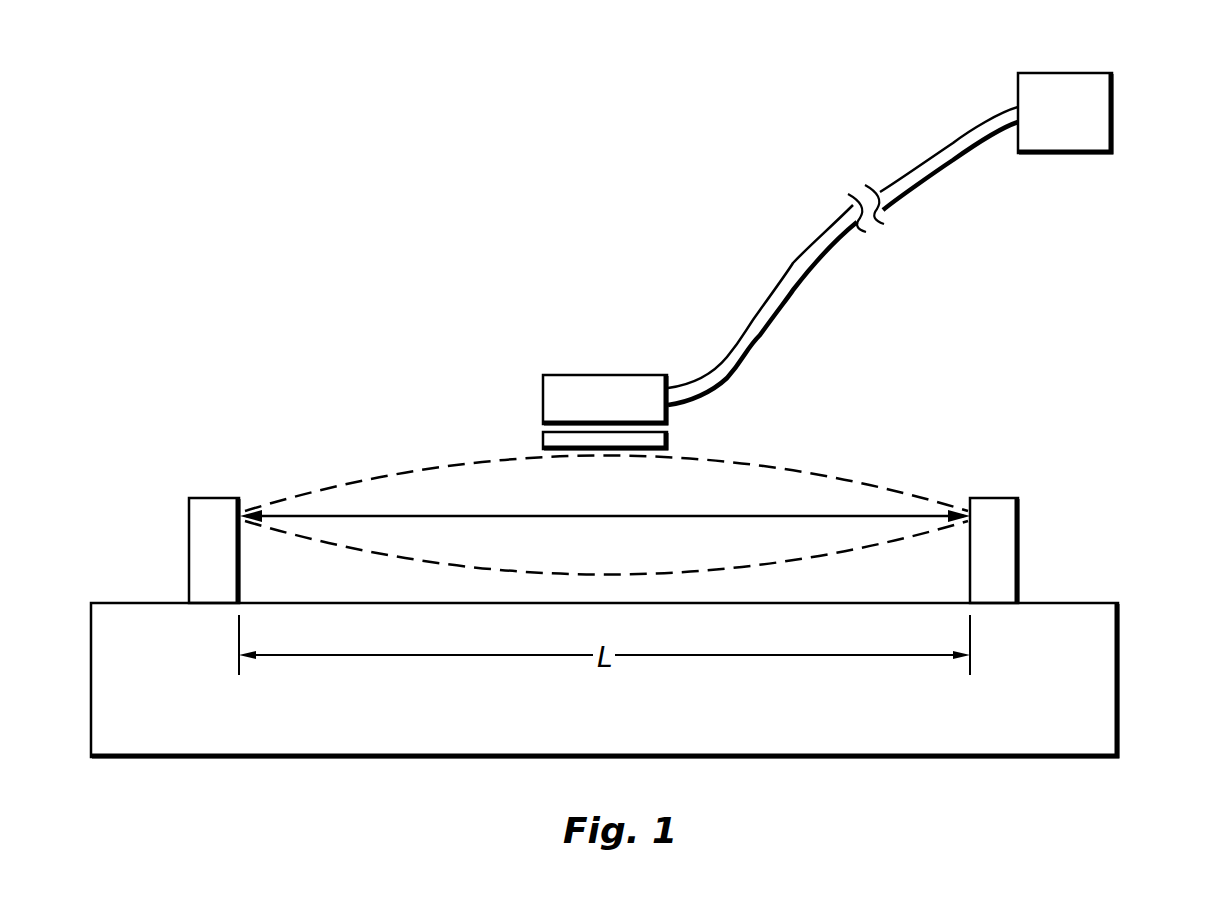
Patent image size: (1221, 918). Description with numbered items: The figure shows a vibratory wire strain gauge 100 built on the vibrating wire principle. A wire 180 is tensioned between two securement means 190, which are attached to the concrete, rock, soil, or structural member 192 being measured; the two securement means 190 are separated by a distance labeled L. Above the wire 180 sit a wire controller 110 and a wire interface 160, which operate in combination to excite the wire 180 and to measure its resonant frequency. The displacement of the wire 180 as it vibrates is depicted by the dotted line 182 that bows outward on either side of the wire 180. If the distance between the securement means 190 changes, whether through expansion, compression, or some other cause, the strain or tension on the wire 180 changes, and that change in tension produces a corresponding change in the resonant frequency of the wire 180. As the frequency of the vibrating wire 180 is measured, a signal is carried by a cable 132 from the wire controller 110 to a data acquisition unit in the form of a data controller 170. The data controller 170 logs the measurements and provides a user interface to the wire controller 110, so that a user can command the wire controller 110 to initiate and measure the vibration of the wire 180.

The vibratory wire strain gauge 100 is at (260, 199).
The wire controller 110 is at (570, 375).
The cable 132 is at (820, 225).
The wire interface 160 is at (543, 436).
The data controller 170 is at (1087, 73).
The wire 180 is at (823, 515).
The dotted line 182 is at (752, 464).
The securement means 190 is at (1018, 553).
The structural member 192 is at (1118, 645).